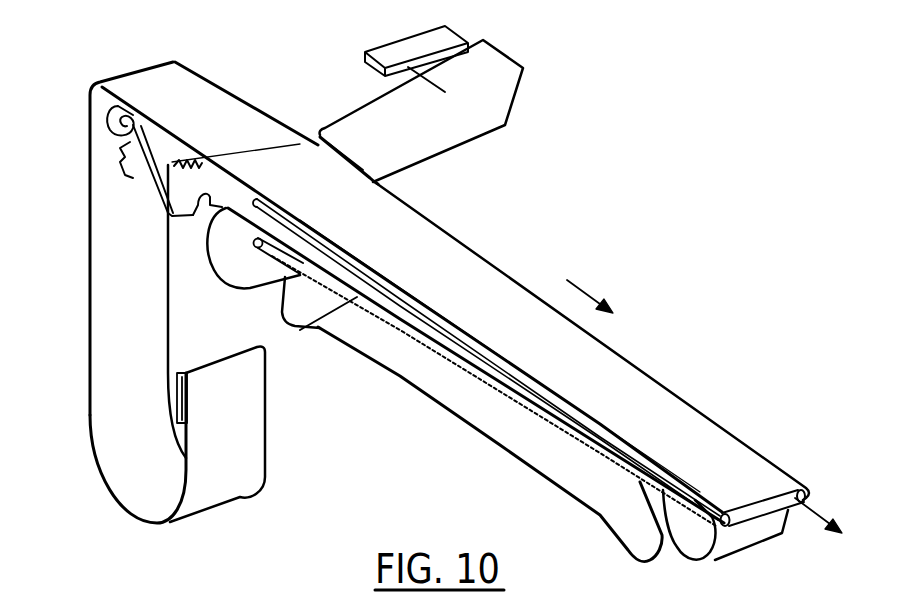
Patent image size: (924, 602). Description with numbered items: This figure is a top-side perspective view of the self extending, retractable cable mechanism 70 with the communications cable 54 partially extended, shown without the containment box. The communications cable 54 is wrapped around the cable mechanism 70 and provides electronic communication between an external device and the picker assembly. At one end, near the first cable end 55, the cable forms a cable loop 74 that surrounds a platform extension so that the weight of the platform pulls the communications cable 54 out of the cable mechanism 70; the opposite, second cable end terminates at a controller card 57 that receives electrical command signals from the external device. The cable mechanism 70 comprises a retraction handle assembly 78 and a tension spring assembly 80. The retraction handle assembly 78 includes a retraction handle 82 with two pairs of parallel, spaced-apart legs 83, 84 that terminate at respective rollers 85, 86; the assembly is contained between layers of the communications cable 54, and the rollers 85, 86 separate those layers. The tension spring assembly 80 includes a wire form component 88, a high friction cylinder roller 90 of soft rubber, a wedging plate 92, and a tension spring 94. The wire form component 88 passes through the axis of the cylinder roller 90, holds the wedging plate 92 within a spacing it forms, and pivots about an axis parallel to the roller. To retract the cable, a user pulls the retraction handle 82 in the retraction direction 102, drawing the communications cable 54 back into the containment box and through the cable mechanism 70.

The communications cable 54 is at (128, 315).
The first cable end 55 is at (187, 410).
The controller card 57 is at (443, 38).
The cable mechanism 70 is at (446, 434).
The cable loop 74 is at (230, 488).
The retraction handle assembly 78 is at (541, 402).
The tension spring assembly 80 is at (180, 237).
The retraction handle 82 is at (765, 505).
The legs 83 is at (360, 262).
The legs 84 is at (380, 355).
The roller 85 is at (260, 200).
The roller 86 is at (273, 258).
The wire form component 88 is at (150, 176).
The high friction cylinder roller 90 is at (110, 128).
The wedging plate 92 is at (183, 160).
The tension spring 94 is at (174, 160).
The retraction direction 102 is at (587, 290).